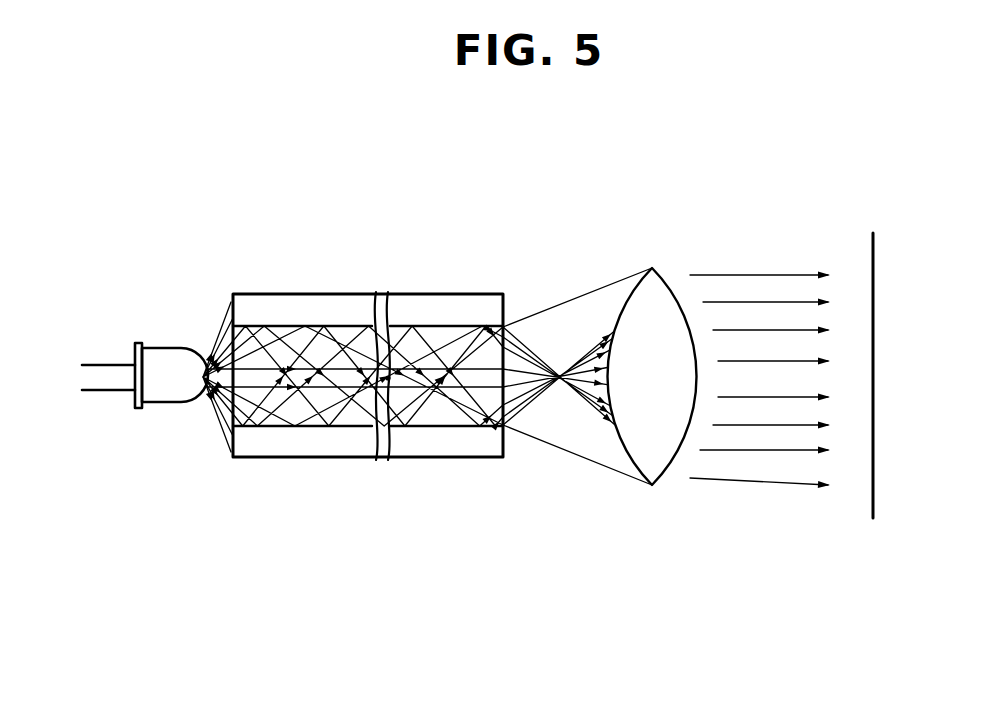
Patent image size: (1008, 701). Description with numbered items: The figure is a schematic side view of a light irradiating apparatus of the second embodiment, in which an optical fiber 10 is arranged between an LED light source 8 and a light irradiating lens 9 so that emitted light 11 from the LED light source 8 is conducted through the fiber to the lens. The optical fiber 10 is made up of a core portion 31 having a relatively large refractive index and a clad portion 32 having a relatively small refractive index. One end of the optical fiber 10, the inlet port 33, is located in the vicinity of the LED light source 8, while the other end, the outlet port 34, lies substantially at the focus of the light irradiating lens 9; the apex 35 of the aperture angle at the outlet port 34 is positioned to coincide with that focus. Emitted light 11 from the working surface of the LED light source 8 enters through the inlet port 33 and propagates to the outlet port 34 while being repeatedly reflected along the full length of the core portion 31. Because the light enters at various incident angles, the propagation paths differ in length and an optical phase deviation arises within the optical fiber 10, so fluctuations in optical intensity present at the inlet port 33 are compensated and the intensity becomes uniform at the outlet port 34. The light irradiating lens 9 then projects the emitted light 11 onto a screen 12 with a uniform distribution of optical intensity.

The LED light source 8 is at (167, 394).
The light irradiating lens 9 is at (658, 286).
The optical fiber 10 is at (442, 359).
The emitted light 11 is at (208, 343).
The screen 12 is at (873, 258).
The core portion 31 is at (267, 417).
The clad portion 32 is at (266, 303).
The inlet port 33 is at (230, 409).
The outlet port 34 is at (505, 352).
The apex of aperture angle 35 is at (388, 378).